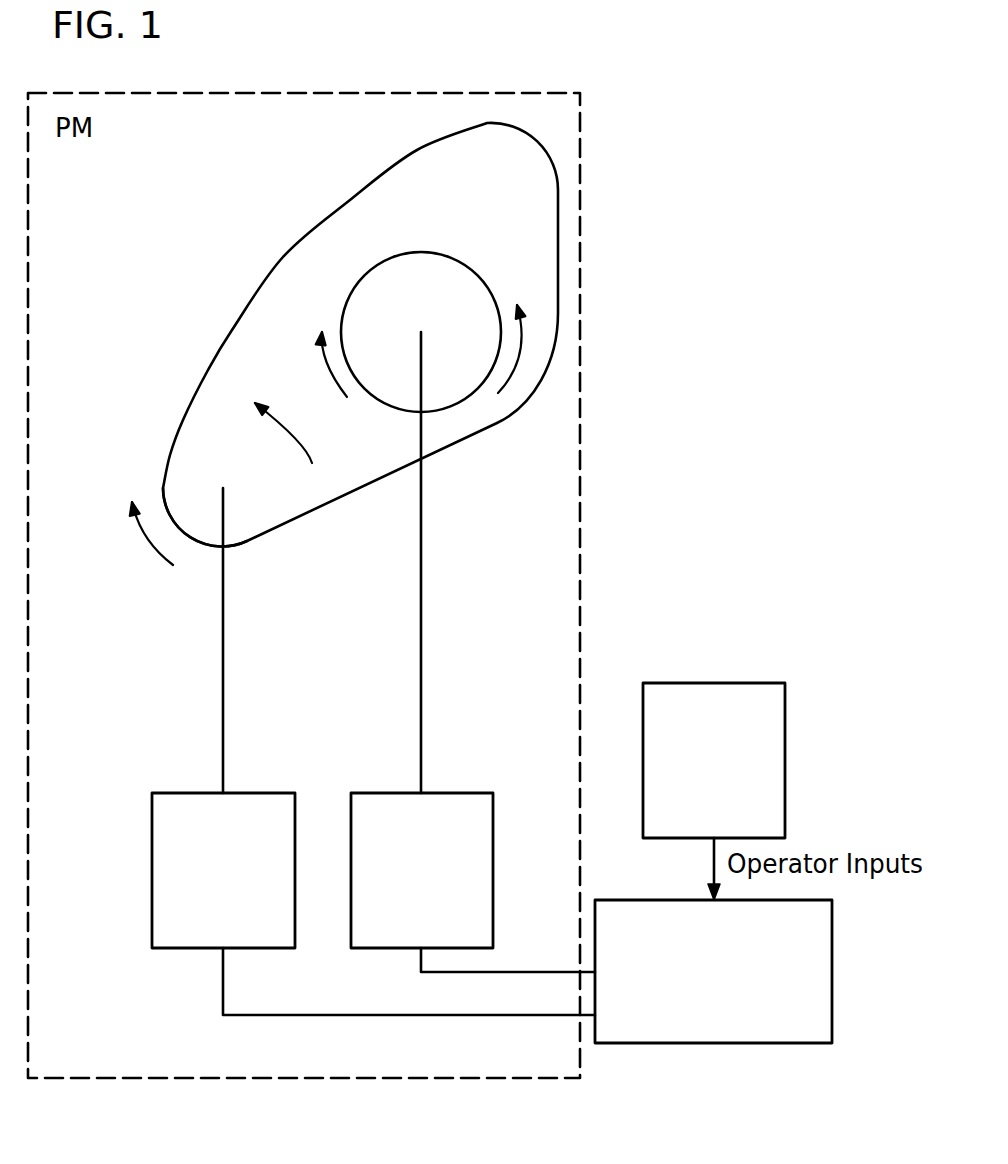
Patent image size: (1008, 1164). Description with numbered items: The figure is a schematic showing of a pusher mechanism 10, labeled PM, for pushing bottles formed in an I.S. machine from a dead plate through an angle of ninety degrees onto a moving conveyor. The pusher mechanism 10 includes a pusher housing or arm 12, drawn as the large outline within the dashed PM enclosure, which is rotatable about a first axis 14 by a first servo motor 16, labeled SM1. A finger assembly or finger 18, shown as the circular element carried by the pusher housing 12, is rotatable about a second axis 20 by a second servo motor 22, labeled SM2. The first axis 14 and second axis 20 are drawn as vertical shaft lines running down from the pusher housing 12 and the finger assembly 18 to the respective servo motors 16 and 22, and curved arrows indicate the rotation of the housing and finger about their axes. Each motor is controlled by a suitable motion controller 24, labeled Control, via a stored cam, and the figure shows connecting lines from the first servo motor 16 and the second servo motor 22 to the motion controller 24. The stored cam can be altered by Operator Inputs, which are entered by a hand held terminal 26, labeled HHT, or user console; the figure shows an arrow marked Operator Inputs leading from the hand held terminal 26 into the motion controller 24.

The pusher mechanism 10 is at (555, 119).
The pusher housing 12 is at (188, 465).
The first axis 14 is at (223, 659).
The first servo motor 16 is at (253, 805).
The finger assembly 18 is at (443, 280).
The second axis 20 is at (421, 646).
The second servo motor 22 is at (453, 805).
The motion controller 24 is at (808, 957).
The hand held terminal 26 is at (762, 733).